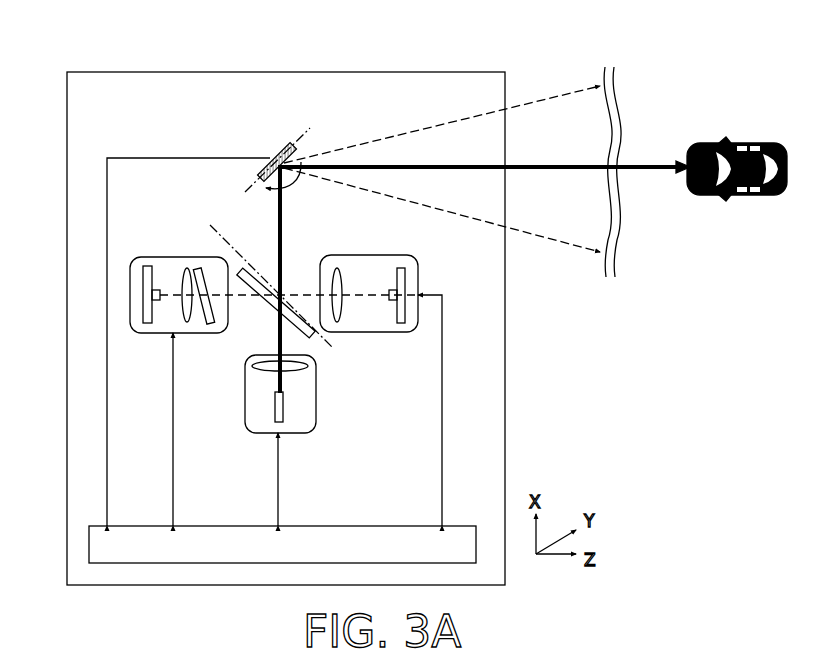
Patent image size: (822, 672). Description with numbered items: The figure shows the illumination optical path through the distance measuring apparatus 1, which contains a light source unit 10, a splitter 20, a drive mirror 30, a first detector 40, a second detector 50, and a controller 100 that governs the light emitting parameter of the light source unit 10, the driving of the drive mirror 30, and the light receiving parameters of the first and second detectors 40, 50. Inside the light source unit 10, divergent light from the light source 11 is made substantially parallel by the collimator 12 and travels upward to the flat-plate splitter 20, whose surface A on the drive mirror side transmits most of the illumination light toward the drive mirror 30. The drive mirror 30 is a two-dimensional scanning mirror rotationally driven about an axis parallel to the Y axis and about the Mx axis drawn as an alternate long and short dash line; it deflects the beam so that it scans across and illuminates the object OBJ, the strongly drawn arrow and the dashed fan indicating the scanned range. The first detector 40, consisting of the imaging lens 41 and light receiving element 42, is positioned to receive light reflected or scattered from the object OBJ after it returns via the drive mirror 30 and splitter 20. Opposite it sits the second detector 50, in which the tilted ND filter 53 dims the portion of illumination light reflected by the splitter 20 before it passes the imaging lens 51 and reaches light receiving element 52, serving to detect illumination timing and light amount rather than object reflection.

The distance measuring apparatus 1 is at (140, 72).
The controller 100 is at (92, 526).
The drive mirror 30 is at (283, 150).
The splitter 20 is at (245, 270).
The light source unit 10 is at (273, 420).
The light source 11 is at (285, 418).
The collimator 12 is at (268, 372).
The first detector 40 is at (391, 325).
The imaging lens 41 is at (340, 298).
The light receiving element 42 is at (405, 290).
The second detector 50 is at (185, 302).
The imaging lens 51 is at (186, 282).
The light receiving element 52 is at (143, 288).
The ND filter 53 is at (228, 318).
The Mx axis Mx is at (300, 138).
The surface A is at (210, 226).
The object OBJ is at (729, 138).